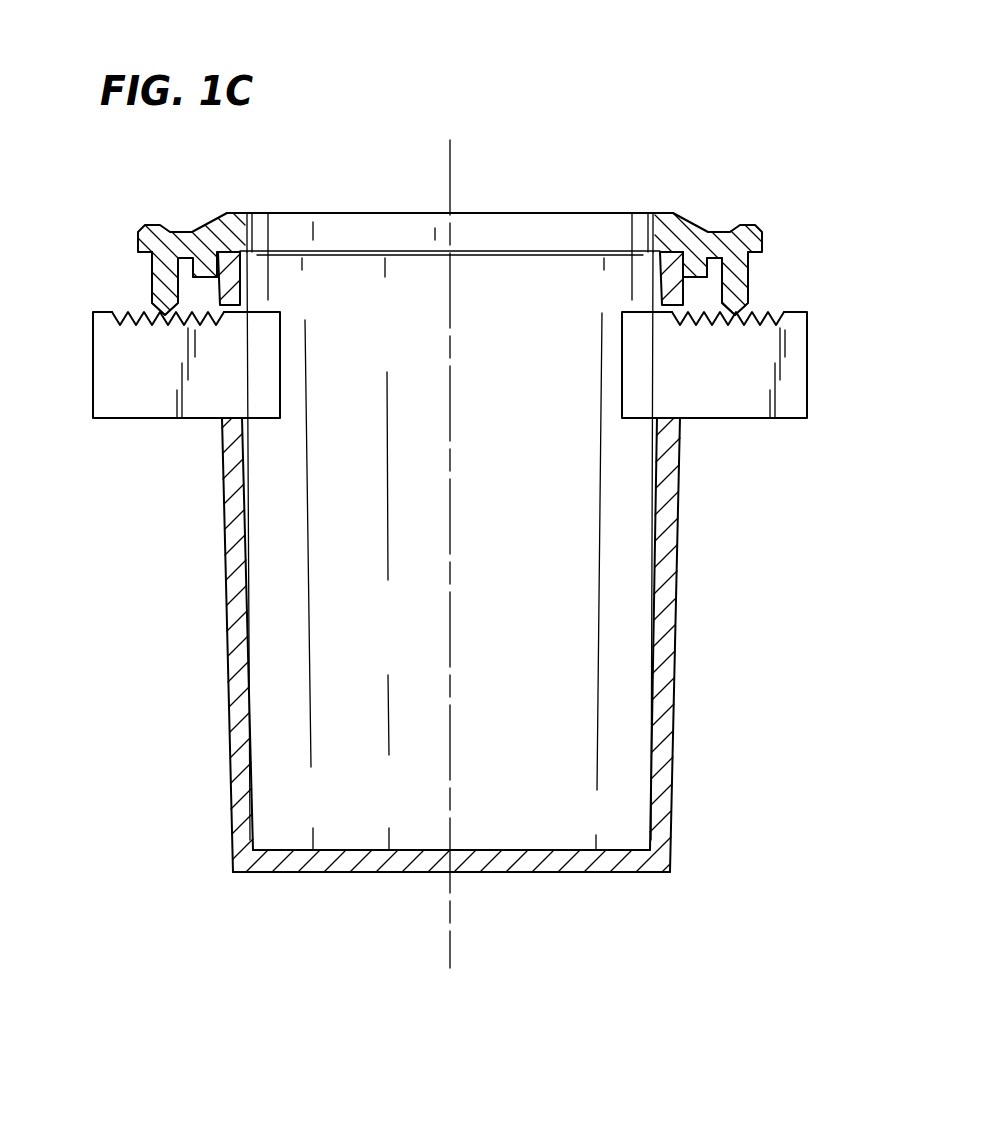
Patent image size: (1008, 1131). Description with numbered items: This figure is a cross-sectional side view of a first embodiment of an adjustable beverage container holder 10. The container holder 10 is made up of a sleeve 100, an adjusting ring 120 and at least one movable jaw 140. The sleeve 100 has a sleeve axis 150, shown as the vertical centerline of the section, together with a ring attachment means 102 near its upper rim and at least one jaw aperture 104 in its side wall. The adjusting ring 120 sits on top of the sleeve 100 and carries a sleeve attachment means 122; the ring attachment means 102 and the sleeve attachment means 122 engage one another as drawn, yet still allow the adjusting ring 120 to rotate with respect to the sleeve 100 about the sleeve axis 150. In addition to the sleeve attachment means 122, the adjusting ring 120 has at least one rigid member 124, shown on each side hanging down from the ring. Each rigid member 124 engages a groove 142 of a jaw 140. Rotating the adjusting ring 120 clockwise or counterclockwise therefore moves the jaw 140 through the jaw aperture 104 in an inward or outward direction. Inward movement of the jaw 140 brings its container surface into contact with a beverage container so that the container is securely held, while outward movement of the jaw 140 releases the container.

The adjustable beverage container holder 10 is at (552, 108).
The sleeve 100 is at (673, 772).
The ring attachment means 102 is at (668, 268).
The jaw aperture 104 is at (681, 425).
The adjusting ring 120 is at (748, 231).
The sleeve attachment means 122 is at (700, 268).
The rigid member 124 is at (733, 289).
The movable jaw 140 is at (790, 389).
The groove 142 is at (133, 311).
The sleeve axis 150 is at (438, 168).